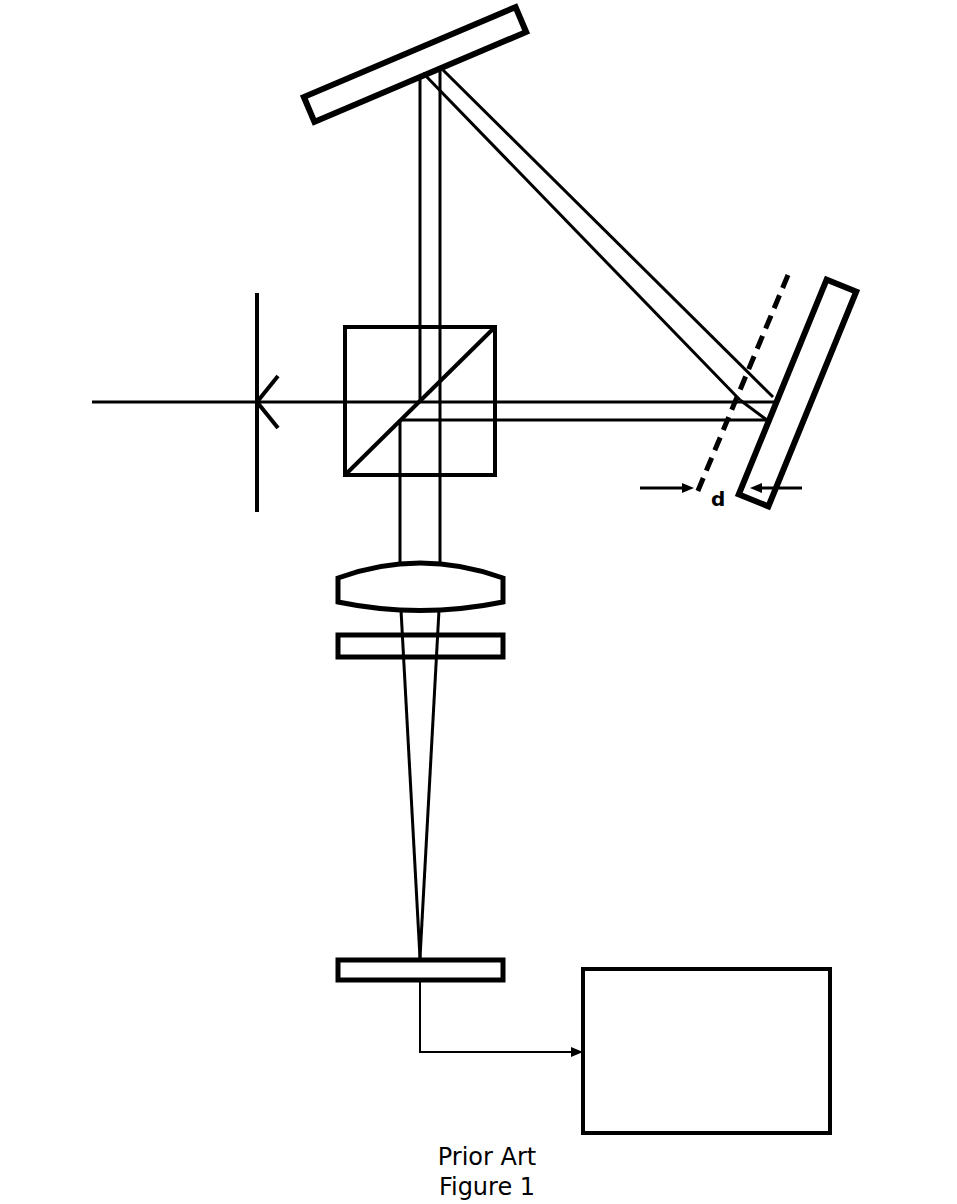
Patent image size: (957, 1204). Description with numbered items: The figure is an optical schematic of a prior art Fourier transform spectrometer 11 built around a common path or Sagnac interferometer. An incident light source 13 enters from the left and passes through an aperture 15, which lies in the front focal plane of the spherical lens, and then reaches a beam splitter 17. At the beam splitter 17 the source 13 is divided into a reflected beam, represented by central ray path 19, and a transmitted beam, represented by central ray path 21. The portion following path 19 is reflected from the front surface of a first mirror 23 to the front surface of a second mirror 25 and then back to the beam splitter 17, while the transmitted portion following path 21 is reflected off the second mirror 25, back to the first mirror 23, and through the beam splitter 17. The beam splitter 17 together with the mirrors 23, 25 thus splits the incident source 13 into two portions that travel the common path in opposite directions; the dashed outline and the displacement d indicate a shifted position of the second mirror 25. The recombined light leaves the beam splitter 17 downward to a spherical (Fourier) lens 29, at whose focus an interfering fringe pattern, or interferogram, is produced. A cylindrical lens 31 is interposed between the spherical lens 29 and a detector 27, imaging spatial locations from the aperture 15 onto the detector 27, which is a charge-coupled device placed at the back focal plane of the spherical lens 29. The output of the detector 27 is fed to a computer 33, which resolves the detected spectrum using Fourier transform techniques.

The Fourier transform spectrometer 11 is at (656, 161).
The incident light source 13 is at (223, 400).
The aperture 15 is at (258, 325).
The beam splitter 17 is at (340, 447).
The central ray path of reflected beam 19 is at (418, 253).
The central ray path of transmitted beam 21 is at (552, 401).
The first mirror 23 is at (352, 72).
The second mirror 25 is at (821, 396).
The detector 27 is at (338, 968).
The spherical (Fourier) lens 29 is at (338, 592).
The cylindrical lens 31 is at (338, 640).
The computer 33 is at (705, 969).